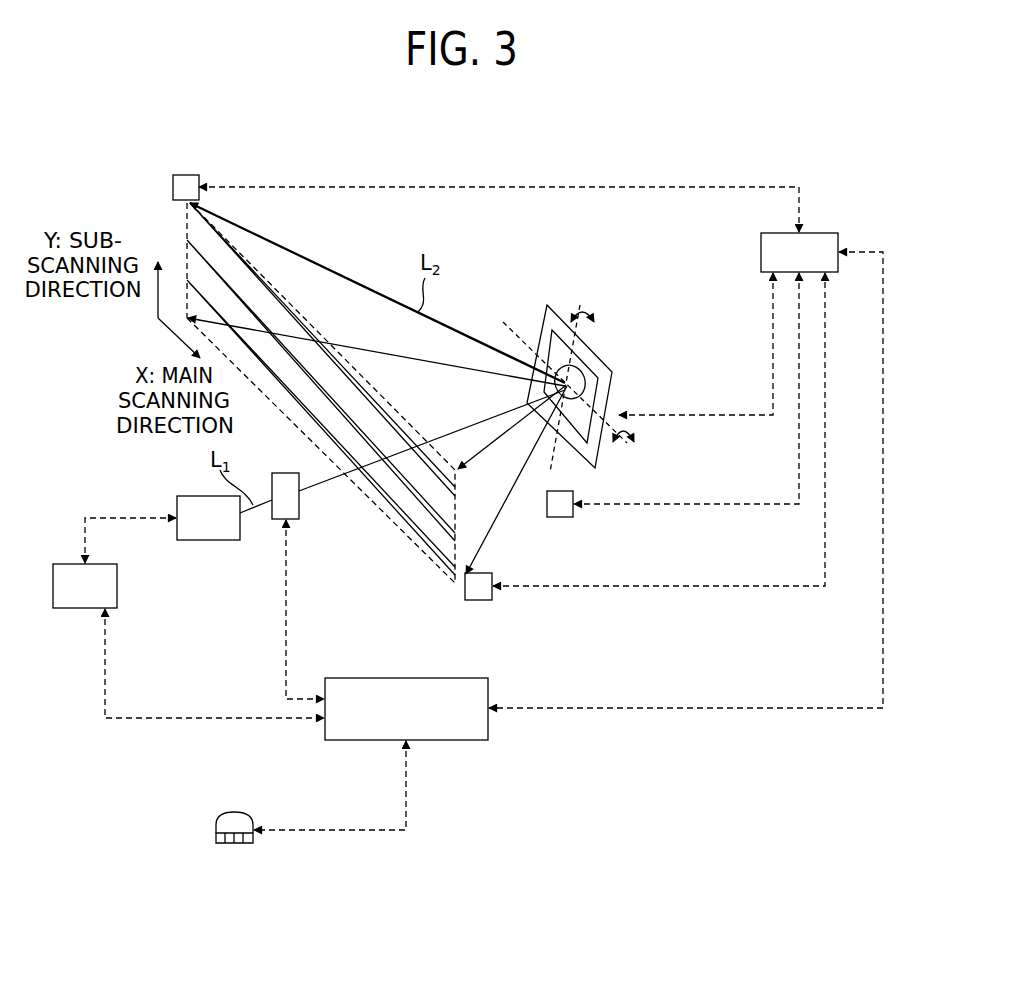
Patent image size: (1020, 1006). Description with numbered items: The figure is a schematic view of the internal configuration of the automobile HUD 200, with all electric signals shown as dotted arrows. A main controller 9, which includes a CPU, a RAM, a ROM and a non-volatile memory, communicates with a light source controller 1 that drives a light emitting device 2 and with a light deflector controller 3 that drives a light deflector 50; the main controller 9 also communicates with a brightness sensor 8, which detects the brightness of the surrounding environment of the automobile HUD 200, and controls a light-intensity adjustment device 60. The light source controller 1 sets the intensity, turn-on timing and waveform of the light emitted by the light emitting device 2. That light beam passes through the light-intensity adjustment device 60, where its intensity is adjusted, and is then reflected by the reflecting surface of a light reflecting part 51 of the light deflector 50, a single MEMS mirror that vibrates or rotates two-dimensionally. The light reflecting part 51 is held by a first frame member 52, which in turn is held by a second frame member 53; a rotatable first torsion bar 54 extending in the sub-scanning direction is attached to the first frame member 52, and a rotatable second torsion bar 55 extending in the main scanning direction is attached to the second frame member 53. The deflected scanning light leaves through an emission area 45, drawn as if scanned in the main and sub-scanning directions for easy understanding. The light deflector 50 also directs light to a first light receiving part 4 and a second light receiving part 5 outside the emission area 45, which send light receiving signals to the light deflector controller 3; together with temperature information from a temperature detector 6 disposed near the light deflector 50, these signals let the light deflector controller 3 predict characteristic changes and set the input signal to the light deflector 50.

The automobile HUD 200 is at (791, 128).
The light source controller 1 is at (84, 608).
The light emitting device 2 is at (207, 540).
The light deflector controller 3 is at (838, 233).
The first light receiving part 4 is at (189, 174).
The second light receiving part 5 is at (478, 600).
The temperature detector 6 is at (558, 517).
The brightness sensor 8 is at (235, 812).
The main controller 9 is at (466, 740).
The emission area 45 is at (187, 222).
The light deflector 50 is at (581, 360).
The light reflecting part 51 is at (598, 370).
The first frame member 52 is at (612, 381).
The second frame member 53 is at (542, 330).
The first torsion bar 54 is at (577, 440).
The second torsion bar 55 is at (607, 406).
The light-intensity adjustment device 60 is at (298, 519).